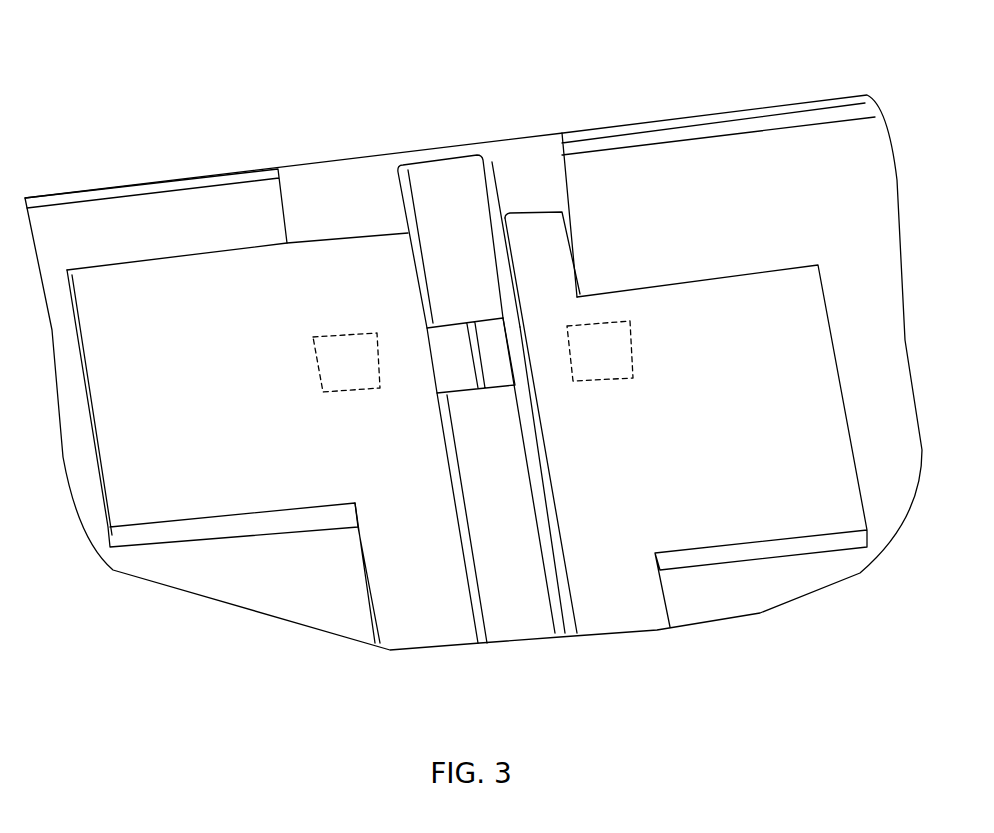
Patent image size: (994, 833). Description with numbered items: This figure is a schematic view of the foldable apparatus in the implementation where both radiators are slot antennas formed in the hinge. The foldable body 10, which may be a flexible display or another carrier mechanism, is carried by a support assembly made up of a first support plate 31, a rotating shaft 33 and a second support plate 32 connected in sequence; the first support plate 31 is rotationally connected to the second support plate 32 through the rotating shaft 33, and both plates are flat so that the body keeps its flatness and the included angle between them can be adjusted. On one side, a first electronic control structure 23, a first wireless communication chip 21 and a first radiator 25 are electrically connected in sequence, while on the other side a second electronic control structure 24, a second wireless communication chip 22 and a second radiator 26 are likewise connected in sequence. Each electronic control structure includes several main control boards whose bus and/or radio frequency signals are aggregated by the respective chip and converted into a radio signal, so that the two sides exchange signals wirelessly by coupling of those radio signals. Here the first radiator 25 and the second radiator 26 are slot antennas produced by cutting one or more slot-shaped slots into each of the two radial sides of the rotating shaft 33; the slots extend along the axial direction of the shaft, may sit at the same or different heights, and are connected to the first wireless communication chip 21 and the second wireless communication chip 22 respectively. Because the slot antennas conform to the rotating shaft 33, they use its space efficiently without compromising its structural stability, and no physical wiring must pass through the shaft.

The foldable body 10 is at (338, 200).
The first wireless communication chip 21 is at (345, 362).
The second wireless communication chip 22 is at (610, 347).
The first electronic control structure 23 is at (223, 467).
The second electronic control structure 24 is at (787, 463).
The first radiator 25 is at (425, 350).
The second radiator 26 is at (530, 363).
The first support plate 31 is at (163, 210).
The second support plate 32 is at (732, 155).
The rotating shaft 33 is at (447, 187).